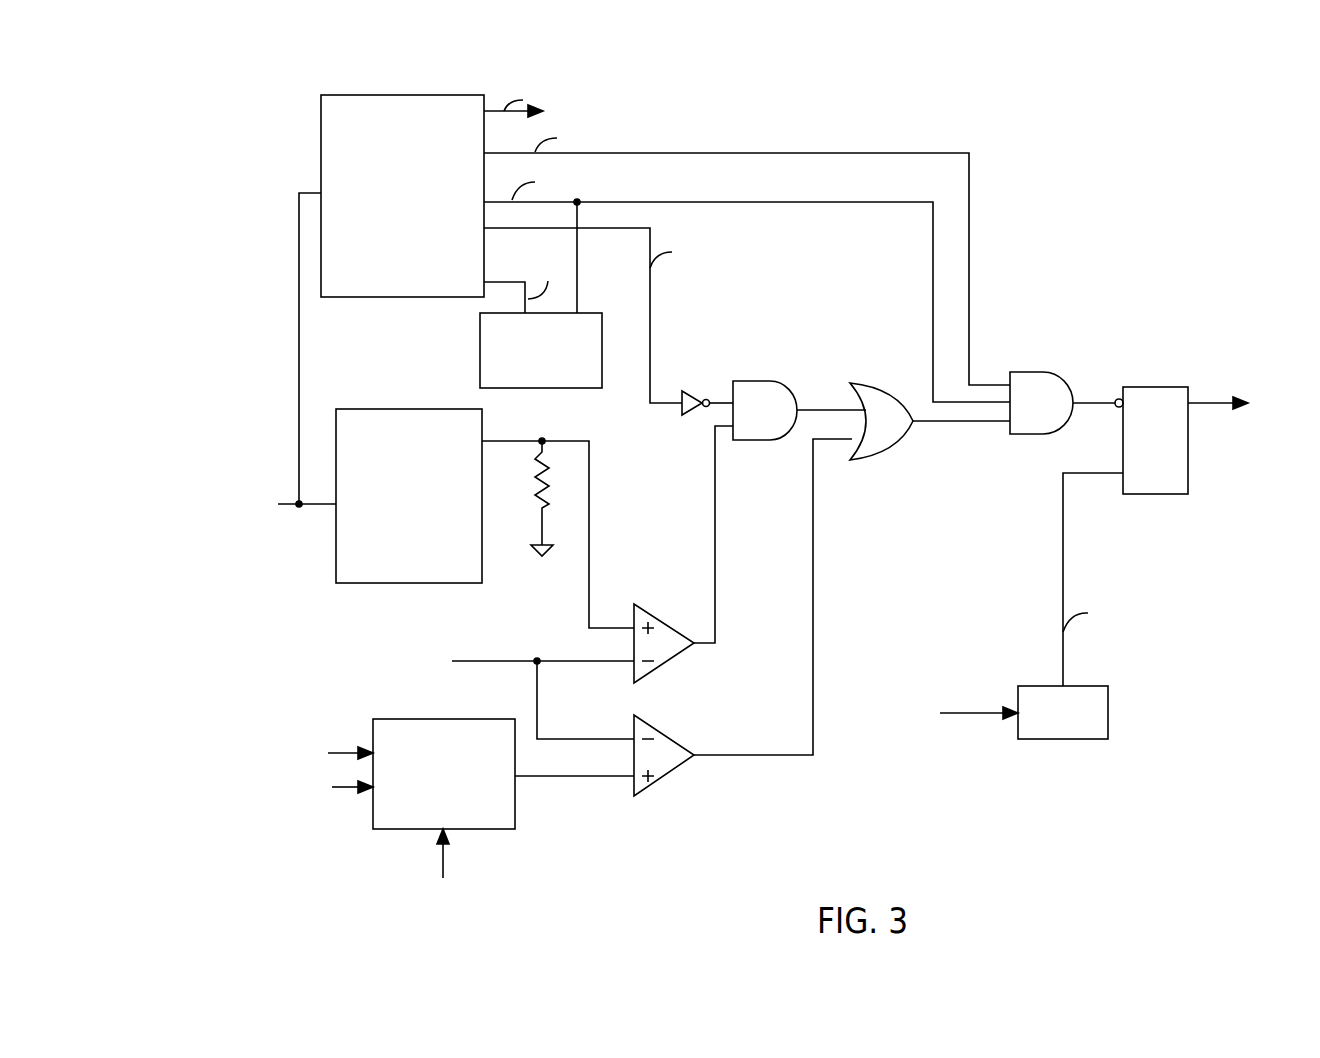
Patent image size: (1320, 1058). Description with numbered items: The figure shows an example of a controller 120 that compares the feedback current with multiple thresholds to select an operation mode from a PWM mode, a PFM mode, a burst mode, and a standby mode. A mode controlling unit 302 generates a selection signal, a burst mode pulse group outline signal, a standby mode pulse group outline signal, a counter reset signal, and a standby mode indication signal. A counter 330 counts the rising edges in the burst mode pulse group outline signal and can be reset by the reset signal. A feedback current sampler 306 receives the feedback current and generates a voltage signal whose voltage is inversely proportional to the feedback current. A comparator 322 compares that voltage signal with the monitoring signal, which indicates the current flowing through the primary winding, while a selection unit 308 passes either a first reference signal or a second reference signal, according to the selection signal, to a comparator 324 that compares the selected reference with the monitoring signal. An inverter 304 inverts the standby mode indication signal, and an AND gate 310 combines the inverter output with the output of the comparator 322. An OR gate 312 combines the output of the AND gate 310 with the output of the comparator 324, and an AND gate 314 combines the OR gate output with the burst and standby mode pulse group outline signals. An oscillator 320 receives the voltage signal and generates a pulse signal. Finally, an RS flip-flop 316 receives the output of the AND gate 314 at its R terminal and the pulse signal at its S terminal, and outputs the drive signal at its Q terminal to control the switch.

The controller 120 is at (268, 154).
The mode controlling unit 302 is at (390, 298).
The inverter 304 is at (687, 395).
The feedback current sampler 306 is at (380, 409).
The selection unit 308 is at (402, 719).
The AND gate 310 is at (752, 381).
The OR gate 312 is at (883, 450).
The AND gate 314 is at (1026, 372).
The RS flip-flop 316 is at (1140, 388).
The oscillator 320 is at (1085, 686).
The comparator 322 is at (648, 612).
The comparator 324 is at (661, 730).
The counter 330 is at (602, 348).